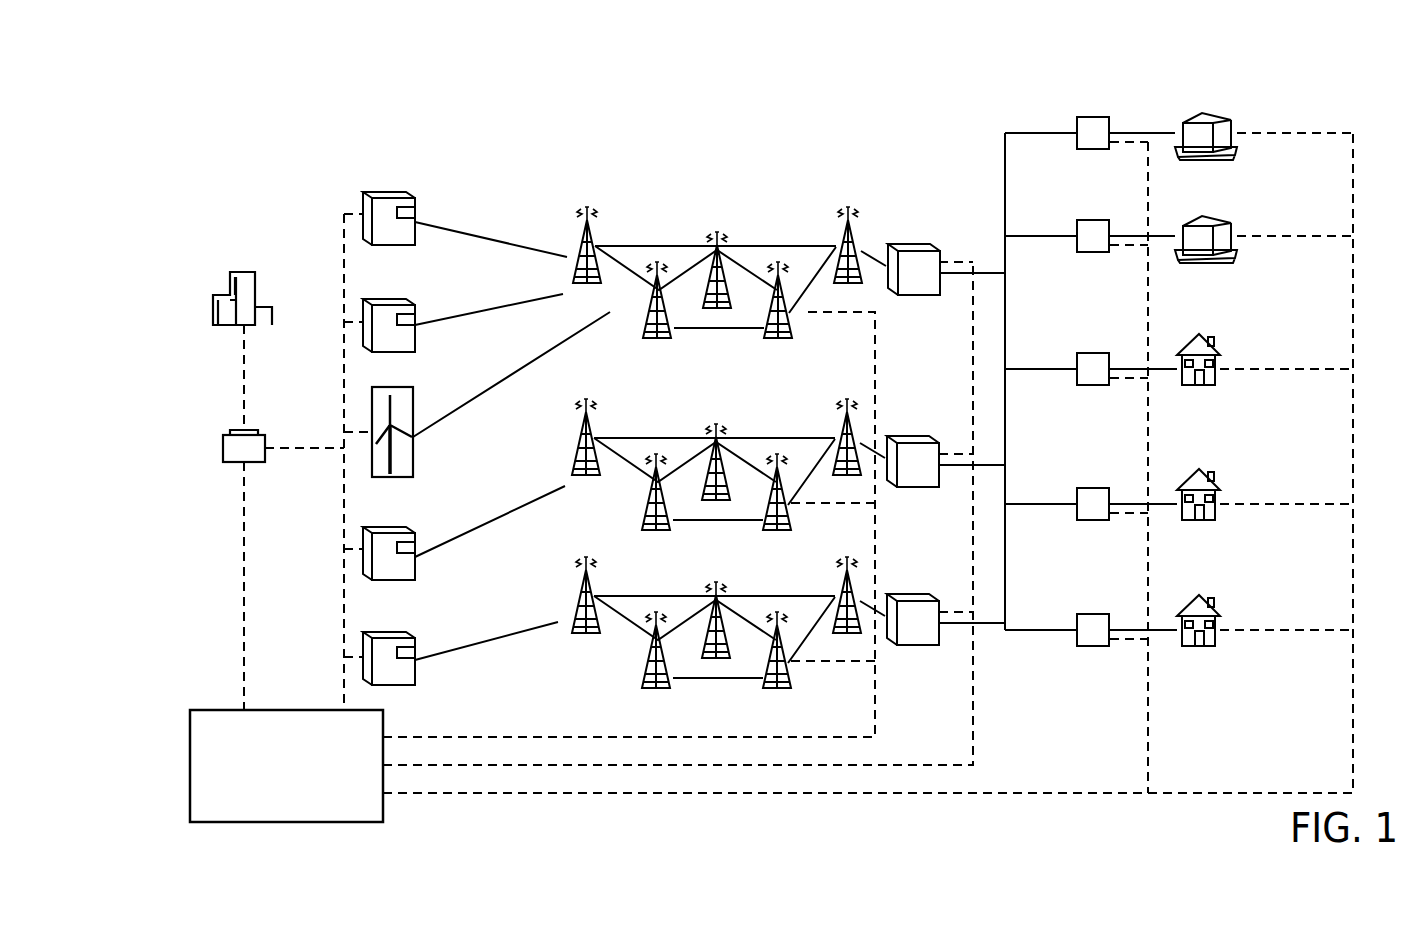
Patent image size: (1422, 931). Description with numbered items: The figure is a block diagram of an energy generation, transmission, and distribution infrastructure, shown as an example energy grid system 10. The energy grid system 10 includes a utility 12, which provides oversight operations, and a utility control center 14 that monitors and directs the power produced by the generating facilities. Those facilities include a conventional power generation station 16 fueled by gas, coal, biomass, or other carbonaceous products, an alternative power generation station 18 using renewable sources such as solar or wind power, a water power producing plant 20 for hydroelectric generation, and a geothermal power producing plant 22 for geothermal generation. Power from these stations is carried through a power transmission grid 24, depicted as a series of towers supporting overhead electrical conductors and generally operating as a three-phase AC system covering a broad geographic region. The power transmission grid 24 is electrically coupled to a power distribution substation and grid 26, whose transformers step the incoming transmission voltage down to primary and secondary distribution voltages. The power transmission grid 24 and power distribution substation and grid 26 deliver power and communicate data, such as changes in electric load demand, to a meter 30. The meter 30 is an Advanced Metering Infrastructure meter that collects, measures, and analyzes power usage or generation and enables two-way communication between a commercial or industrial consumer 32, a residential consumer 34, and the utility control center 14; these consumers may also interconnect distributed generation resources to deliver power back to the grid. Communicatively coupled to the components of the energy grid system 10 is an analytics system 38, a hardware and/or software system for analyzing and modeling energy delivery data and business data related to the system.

The energy grid system 10 is at (318, 110).
The utility 12 is at (240, 272).
The utility control center 14 is at (258, 463).
The power generation station 16 is at (388, 196).
The alternative power generation station 18 is at (392, 387).
The water power producing plant 20 is at (388, 531).
The geothermal power producing plant 22 is at (388, 636).
The power transmission grid 24 is at (674, 208).
The power distribution substation and grid 26 is at (910, 245).
The meter 30 is at (1093, 117).
The commercial and/or industrial consumer 32 is at (1216, 115).
The residential consumer 34 is at (1193, 345).
The analytics system 38 is at (190, 766).